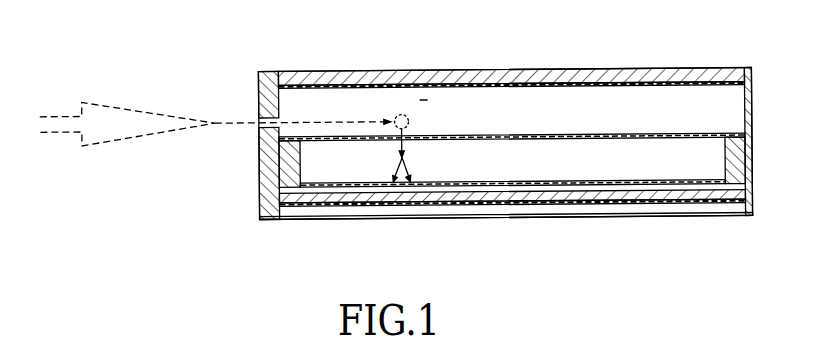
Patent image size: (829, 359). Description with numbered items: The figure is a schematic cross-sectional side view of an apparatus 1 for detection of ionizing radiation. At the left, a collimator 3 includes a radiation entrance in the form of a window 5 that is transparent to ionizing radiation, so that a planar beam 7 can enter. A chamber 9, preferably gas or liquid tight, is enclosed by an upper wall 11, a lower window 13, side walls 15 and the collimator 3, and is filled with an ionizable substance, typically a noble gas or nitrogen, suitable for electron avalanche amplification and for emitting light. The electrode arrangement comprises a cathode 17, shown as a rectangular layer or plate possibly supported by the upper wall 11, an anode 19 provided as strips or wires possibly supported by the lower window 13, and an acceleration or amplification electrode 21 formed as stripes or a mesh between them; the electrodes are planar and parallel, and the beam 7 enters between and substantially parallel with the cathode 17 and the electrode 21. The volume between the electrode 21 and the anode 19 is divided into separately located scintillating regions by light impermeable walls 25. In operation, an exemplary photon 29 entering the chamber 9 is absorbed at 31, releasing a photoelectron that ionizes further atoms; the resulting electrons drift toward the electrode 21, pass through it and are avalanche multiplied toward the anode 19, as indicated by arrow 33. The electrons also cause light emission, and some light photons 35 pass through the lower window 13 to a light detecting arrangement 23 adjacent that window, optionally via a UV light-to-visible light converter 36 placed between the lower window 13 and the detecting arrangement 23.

The apparatus 1 is at (505, 117).
The collimator 3 is at (265, 70).
The window 5 is at (258, 118).
The planar beam 7 is at (120, 107).
The chamber 9 is at (630, 101).
The upper wall 11 is at (515, 82).
The lower window 13 is at (702, 209).
The side walls 15 is at (752, 117).
The cathode 17 is at (463, 76).
The anode 19 is at (663, 178).
The acceleration or amplification electrode 21 is at (567, 136).
The light detecting arrangement 23 is at (500, 220).
The light impermeable wall 25 is at (578, 169).
The photon 29 is at (325, 120).
The absorption point 31 is at (410, 120).
The arrow 33 is at (405, 146).
The light photons 35 is at (397, 169).
The UV light-to-visible light converter 36 is at (372, 194).